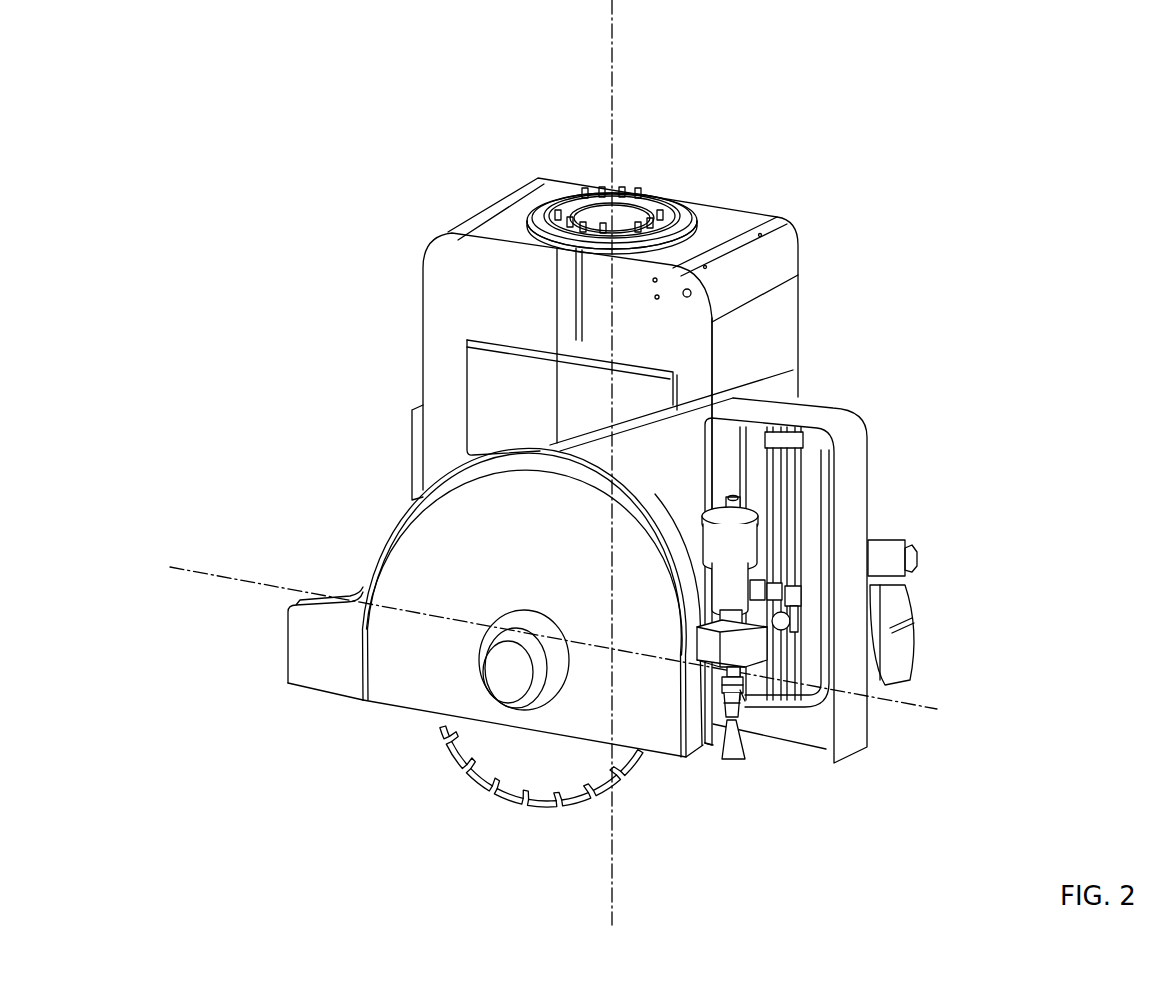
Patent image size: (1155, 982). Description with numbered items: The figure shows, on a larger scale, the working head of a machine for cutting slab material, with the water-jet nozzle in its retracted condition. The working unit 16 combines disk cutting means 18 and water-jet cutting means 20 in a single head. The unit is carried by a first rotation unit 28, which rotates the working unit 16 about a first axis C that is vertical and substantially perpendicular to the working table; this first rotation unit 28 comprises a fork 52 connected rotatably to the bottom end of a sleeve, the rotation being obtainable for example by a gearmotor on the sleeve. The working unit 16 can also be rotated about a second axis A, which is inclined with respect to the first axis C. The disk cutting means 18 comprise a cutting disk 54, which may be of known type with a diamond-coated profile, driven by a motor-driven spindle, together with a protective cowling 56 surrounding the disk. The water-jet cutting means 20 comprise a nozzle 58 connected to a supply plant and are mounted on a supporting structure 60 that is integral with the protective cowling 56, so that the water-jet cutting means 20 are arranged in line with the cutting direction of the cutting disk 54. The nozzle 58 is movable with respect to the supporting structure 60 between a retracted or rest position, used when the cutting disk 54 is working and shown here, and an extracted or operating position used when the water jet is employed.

The working unit 16 is at (873, 518).
The disk cutting means 18 is at (452, 768).
The water-jet cutting means 20 is at (888, 688).
The first rotation unit 28 is at (692, 190).
The fork 52 is at (443, 296).
The cutting disk 54 is at (546, 808).
The protective cowling 56 is at (670, 752).
The nozzle 58 is at (733, 761).
The supporting structure 60 is at (758, 392).
The second axis A is at (927, 712).
The first axis C is at (613, 40).